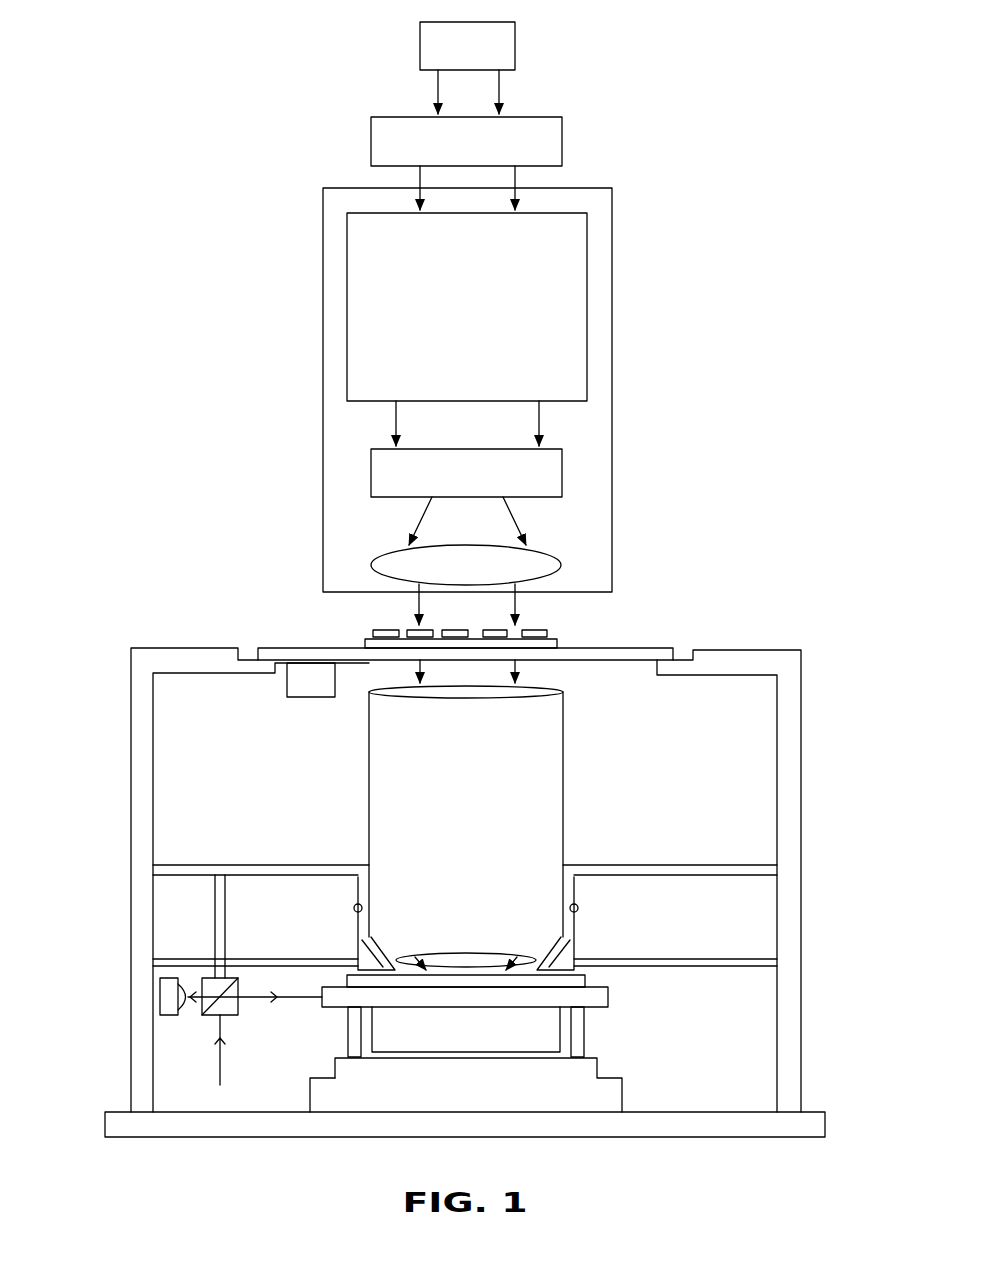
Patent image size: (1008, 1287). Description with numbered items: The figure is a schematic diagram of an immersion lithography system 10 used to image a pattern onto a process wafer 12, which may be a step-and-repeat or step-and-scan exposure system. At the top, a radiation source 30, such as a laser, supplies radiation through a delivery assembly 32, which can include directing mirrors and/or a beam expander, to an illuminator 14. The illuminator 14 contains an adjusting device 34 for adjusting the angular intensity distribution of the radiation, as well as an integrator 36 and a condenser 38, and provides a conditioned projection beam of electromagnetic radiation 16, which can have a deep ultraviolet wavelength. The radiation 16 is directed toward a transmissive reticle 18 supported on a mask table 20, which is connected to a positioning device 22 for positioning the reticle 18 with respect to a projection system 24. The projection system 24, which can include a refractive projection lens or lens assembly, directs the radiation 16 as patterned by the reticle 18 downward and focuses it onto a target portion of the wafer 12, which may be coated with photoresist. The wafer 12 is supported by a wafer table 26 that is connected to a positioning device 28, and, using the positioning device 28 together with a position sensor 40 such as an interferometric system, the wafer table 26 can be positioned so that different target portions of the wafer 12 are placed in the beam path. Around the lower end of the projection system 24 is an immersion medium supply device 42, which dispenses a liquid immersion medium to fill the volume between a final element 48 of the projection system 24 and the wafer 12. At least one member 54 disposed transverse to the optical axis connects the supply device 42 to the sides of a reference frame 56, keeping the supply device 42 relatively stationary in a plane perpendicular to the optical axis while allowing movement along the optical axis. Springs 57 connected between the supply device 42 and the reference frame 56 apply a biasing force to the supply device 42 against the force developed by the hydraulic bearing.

The immersion lithography system 10 is at (236, 221).
The process wafer 12 is at (573, 983).
The illuminator 14 is at (612, 229).
The electromagnetic radiation 16 is at (418, 599).
The reticle 18 is at (560, 635).
The mask table 20 is at (663, 647).
The positioning device 22 is at (298, 685).
The projection system 24 is at (550, 732).
The wafer table 26 is at (537, 1030).
The positioning device 28 is at (597, 1090).
The radiation source 30 is at (503, 46).
The delivery assembly 32 is at (550, 142).
The adjusting device 34 is at (577, 296).
The integrator 36 is at (578, 475).
The condenser 38 is at (577, 566).
The position sensor 40 is at (184, 1050).
The immersion medium supply device 42 is at (365, 953).
The final element 48 is at (480, 960).
The member 54 is at (265, 957).
The reference frame 56 is at (143, 779).
The springs 57 is at (357, 890).